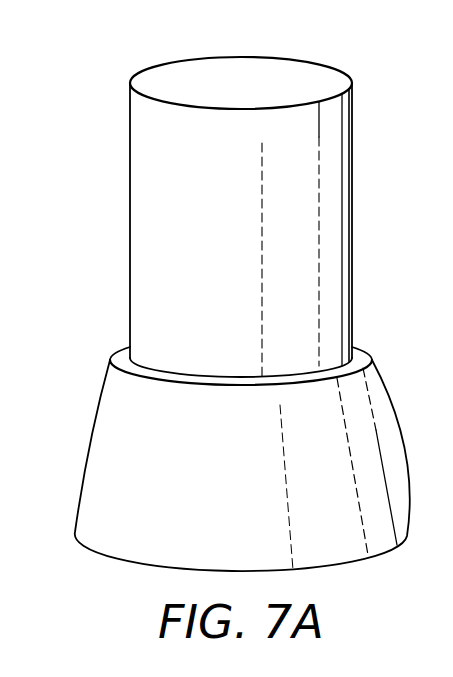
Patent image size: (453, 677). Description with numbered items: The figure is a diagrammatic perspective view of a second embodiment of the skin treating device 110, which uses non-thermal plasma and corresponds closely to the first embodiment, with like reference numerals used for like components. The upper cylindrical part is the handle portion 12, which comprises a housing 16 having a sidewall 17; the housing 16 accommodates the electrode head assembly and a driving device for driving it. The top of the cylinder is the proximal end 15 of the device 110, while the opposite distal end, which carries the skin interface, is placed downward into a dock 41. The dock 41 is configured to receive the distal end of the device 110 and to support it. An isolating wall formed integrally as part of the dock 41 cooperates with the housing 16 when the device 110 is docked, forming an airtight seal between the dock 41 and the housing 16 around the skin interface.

The second embodiment of the skin treating device 110 is at (109, 61).
The handle portion 12 is at (130, 178).
The proximal end 15 is at (357, 104).
The housing 16 is at (335, 180).
The sidewall 17 is at (335, 268).
The dock 41 is at (89, 429).